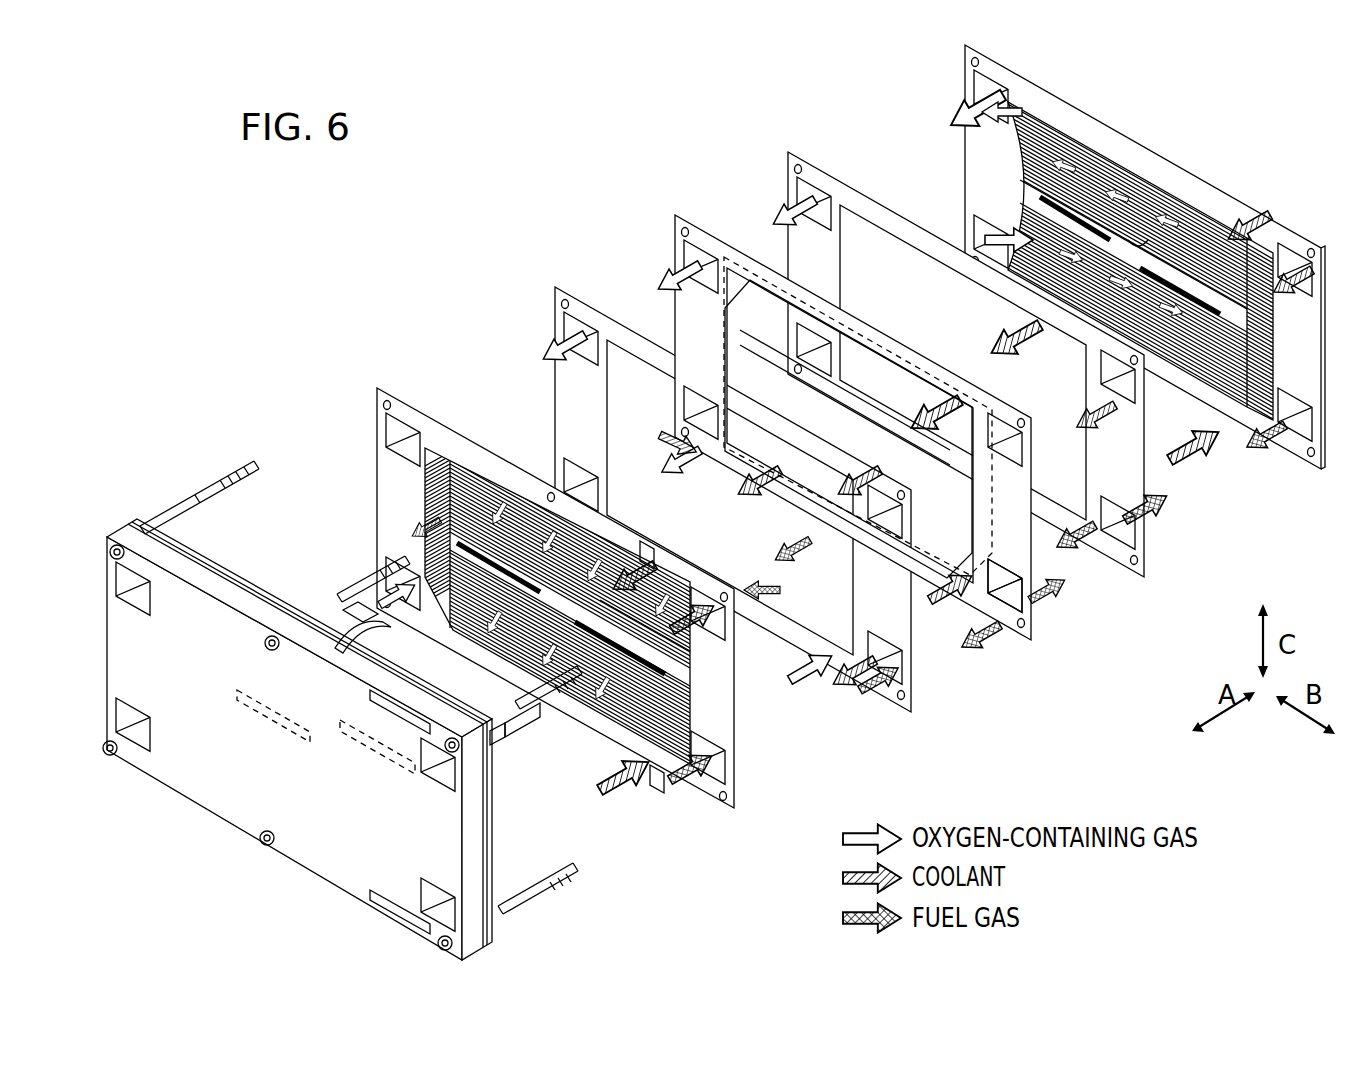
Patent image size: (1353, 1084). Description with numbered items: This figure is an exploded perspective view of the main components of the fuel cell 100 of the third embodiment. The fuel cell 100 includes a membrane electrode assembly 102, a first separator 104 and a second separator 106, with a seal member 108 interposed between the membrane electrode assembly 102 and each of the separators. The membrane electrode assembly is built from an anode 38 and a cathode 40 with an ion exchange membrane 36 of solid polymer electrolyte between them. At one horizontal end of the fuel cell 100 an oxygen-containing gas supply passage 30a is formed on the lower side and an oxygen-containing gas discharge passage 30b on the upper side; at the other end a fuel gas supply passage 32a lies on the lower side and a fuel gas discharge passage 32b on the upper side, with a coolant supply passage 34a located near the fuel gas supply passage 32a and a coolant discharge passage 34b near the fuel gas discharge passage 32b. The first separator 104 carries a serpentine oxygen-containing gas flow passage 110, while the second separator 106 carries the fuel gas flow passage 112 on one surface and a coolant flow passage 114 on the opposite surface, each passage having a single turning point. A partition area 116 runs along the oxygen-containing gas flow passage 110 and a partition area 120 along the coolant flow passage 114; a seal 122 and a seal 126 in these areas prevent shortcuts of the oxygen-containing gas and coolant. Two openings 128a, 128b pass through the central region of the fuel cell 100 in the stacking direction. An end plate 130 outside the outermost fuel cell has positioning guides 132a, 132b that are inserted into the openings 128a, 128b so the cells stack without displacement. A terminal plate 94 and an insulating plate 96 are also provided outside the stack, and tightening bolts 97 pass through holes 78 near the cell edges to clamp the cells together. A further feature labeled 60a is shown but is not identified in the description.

The fuel cell 100 is at (420, 225).
The first separator 104 is at (1134, 258).
The second separator 106 is at (547, 595).
The seal member 108 is at (787, 152).
The membrane electrode assembly 102 is at (839, 416).
The end plate 130 is at (315, 703).
The anode 38 is at (725, 322).
The cathode 40 is at (748, 258).
The ion exchange membrane 36 is at (1022, 562).
The oxygen-containing gas supply passage 30a is at (380, 560).
The oxygen-containing gas discharge passage 30b is at (385, 462).
The fuel gas supply passage 32a is at (700, 745).
The fuel gas discharge passage 32b is at (725, 638).
The coolant supply passage 34a is at (658, 780).
The coolant discharge passage 34b is at (648, 541).
The hole 60a is at (548, 495).
The hole 78 is at (720, 802).
The terminal plate 94 is at (213, 566).
The insulating plate 96 is at (238, 590).
The tightening bolt 97 is at (212, 490).
The oxygen-containing gas flow passage 110 is at (1213, 370).
The fuel gas flow passage 112 is at (478, 465).
The coolant flow passage 114 is at (588, 692).
The partition area 116 is at (1138, 243).
The partition area 120 is at (440, 536).
The seal 122 is at (1228, 312).
The seal 126 is at (678, 675).
The opening 128a is at (635, 685).
The opening 128b is at (500, 565).
The positioning guide 132a is at (512, 745).
The positioning guide 132b is at (330, 614).